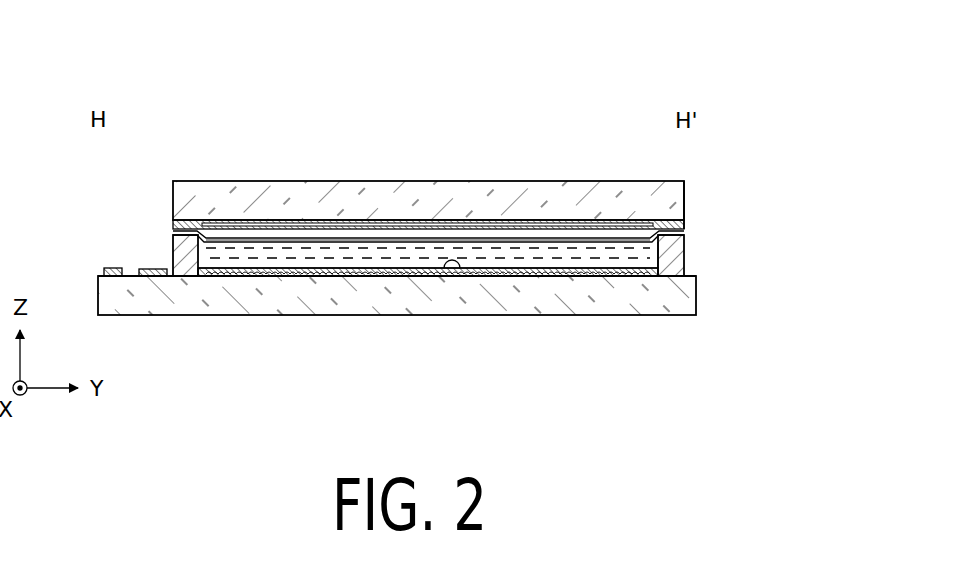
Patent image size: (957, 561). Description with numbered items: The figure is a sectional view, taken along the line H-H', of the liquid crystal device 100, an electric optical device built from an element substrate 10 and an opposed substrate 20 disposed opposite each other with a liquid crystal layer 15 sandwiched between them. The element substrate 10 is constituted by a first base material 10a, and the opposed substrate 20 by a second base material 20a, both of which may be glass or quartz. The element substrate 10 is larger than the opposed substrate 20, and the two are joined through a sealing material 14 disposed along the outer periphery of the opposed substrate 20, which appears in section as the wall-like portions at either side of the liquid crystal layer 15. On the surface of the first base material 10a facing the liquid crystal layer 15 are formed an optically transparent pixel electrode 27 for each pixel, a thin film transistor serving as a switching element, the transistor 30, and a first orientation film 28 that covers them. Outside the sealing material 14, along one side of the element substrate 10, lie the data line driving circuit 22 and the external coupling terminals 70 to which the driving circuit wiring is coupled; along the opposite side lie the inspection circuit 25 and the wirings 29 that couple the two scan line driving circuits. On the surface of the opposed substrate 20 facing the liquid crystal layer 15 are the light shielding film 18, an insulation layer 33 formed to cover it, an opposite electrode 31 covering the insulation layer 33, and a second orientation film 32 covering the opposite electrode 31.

The liquid crystal device 100 is at (634, 60).
The element substrate 10 is at (780, 268).
The first base material 10a is at (697, 294).
The sealing material 14 is at (181, 262).
The liquid crystal layer 15 is at (686, 272).
The light shielding film 18 is at (216, 226).
The opposed substrate 20 is at (780, 183).
The second base material 20a is at (686, 201).
The data line driving circuit 22 is at (150, 268).
The inspection circuit 25 is at (623, 276).
The pixel electrode 27 is at (392, 277).
The first orientation film 28 is at (450, 262).
The wirings 29 is at (645, 262).
The transistor 30 is at (428, 336).
The opposite electrode 31 is at (585, 238).
The second orientation film 32 is at (482, 240).
The insulation layer 33 is at (407, 234).
The external coupling terminals 70 is at (113, 267).